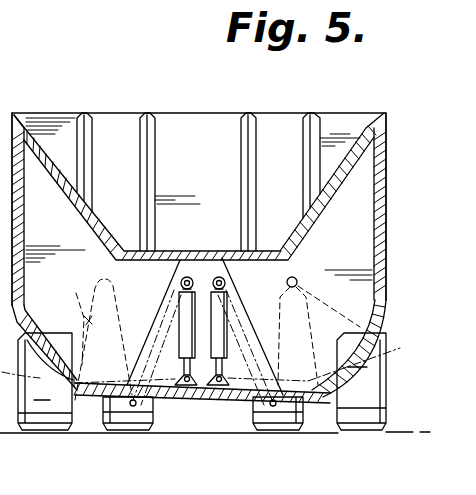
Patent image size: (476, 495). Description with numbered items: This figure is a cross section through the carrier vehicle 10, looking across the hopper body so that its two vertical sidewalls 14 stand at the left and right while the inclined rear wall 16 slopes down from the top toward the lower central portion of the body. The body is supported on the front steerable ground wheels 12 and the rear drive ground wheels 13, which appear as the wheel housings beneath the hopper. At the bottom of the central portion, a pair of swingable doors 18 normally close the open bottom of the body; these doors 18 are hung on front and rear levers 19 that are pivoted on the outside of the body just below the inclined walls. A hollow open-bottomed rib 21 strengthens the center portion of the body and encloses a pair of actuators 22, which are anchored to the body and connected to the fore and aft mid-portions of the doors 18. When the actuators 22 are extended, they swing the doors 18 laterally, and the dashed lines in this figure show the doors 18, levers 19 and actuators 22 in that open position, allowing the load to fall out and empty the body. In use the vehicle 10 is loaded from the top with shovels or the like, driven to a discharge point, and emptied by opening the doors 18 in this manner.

The carrier vehicle 10 is at (178, 109).
The front steerable ground wheels 12 is at (2, 150).
The rear drive ground wheels 13 is at (378, 372).
The vertical sidewalls 14 is at (381, 188).
The inclined rear wall 16 is at (278, 119).
The swingable doors 18 is at (78, 435).
The front and rear levers 19 is at (78, 300).
The hollow open-bottomed rib 21 is at (100, 218).
The actuators 22 is at (183, 306).